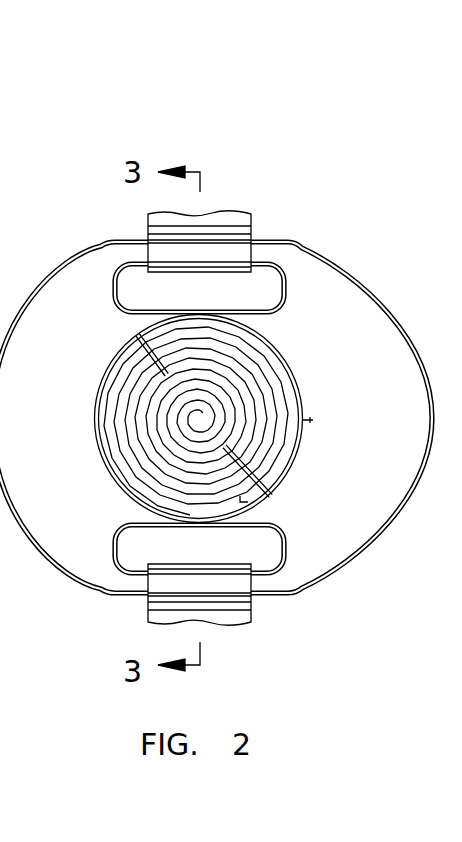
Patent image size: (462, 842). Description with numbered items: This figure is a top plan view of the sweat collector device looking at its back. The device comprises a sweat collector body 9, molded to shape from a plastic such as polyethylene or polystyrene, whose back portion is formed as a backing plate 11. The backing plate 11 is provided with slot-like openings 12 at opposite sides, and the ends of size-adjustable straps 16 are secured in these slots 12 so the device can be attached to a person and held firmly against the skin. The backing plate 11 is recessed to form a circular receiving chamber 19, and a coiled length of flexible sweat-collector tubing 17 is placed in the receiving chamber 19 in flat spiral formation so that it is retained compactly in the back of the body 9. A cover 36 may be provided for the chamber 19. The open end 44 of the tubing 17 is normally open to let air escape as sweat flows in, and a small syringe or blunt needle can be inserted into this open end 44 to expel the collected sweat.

The sweat collector body 9 is at (221, 418).
The backing plate 11 is at (368, 307).
The slot-like openings 12 is at (263, 277).
The straps 16 is at (220, 222).
The sweat-collector tubing 17 is at (127, 380).
The circular receiving chamber 19 is at (291, 370).
The cover 36 is at (287, 452).
The open end 44 is at (245, 500).